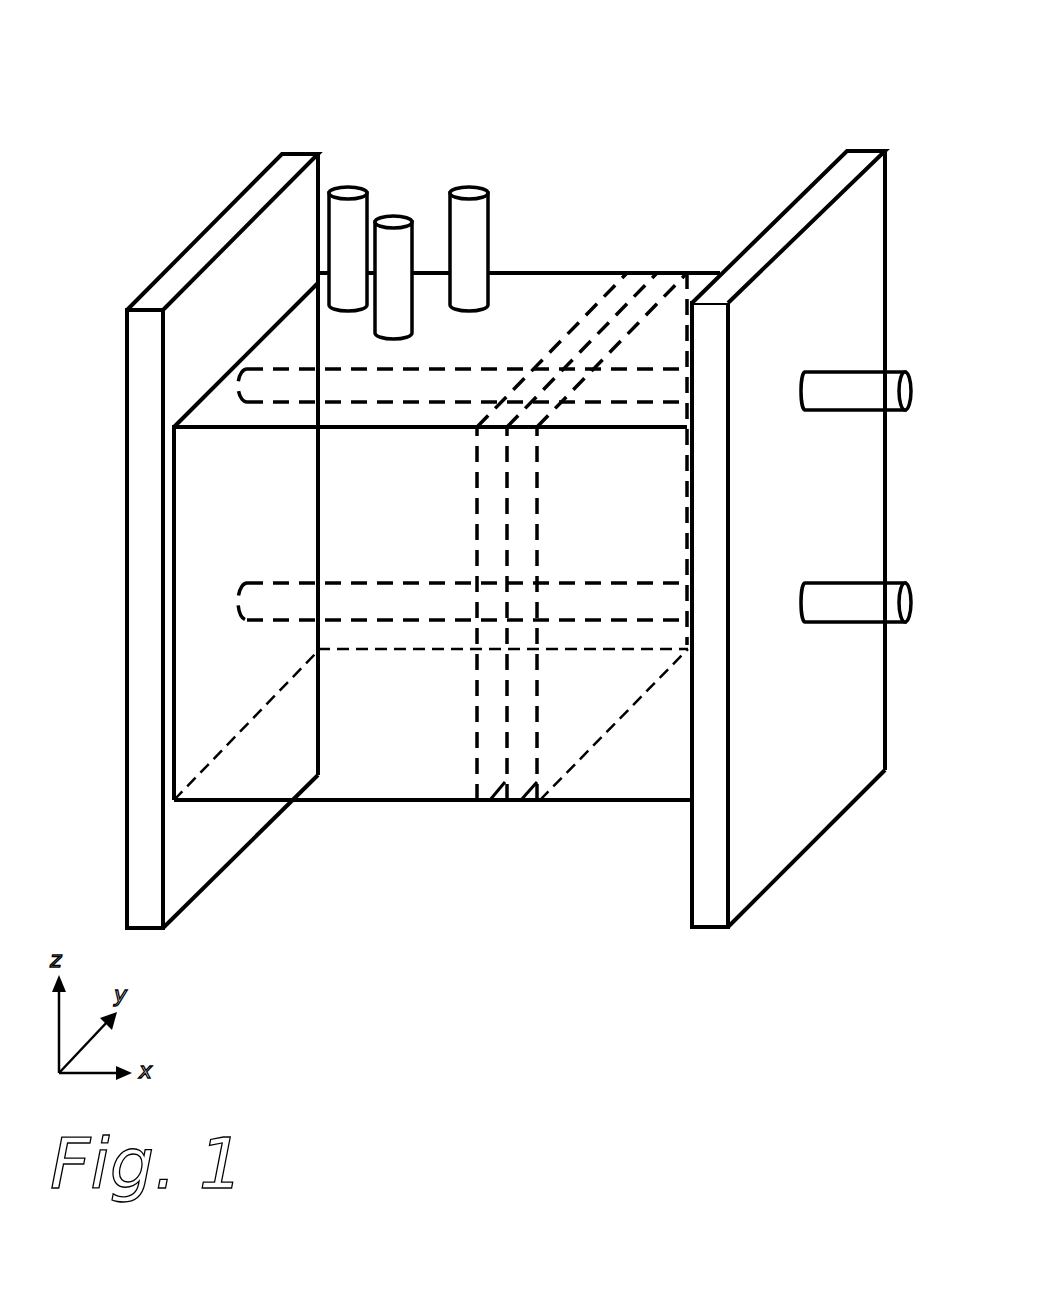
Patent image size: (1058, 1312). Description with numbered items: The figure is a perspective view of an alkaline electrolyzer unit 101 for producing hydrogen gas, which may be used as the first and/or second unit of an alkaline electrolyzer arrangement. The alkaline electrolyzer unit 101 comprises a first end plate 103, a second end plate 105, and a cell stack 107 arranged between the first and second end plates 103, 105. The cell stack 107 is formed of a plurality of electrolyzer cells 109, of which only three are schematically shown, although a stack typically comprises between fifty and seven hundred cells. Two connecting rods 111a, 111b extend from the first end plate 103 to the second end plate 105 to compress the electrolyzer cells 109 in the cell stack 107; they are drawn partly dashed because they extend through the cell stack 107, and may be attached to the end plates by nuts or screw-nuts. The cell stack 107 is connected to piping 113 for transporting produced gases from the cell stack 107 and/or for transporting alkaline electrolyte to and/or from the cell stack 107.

The alkaline electrolyzer unit 101 is at (139, 120).
The first end plate 103 is at (165, 290).
The second end plate 105 is at (843, 170).
The cell stack 107 is at (528, 287).
The electrolyzer cells 109 is at (501, 842).
The connecting rod 111a is at (856, 380).
The connecting rod 111b is at (860, 595).
The piping 113 is at (482, 152).